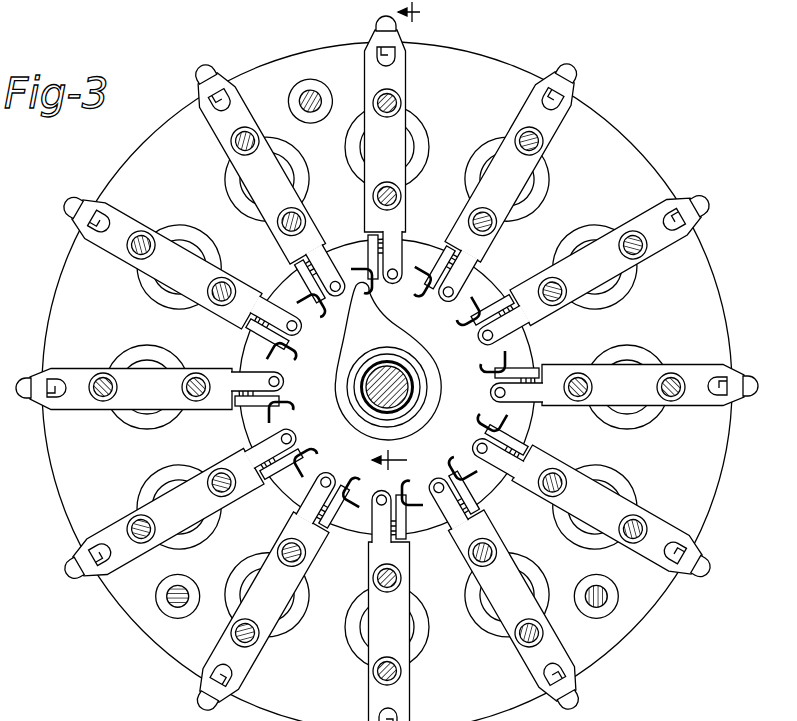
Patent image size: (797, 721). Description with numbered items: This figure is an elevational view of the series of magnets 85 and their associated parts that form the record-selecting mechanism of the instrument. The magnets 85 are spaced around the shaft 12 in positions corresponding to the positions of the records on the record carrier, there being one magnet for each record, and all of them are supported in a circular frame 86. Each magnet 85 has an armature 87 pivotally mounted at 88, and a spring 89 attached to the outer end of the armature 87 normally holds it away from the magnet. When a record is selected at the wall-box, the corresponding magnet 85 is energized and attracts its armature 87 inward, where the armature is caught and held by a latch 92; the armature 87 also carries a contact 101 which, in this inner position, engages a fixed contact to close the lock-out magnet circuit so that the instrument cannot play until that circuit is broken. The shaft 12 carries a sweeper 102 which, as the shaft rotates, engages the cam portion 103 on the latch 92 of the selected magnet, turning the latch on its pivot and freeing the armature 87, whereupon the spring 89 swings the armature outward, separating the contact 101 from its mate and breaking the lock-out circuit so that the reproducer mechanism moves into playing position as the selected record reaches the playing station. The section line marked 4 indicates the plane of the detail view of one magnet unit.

The shaft 12 is at (407, 388).
The magnets 85 is at (538, 220).
The circular frame 86 is at (638, 160).
The armature 87 is at (548, 141).
The armature pivot 88 is at (565, 107).
The spring 89 is at (580, 80).
The latch 92 is at (448, 252).
The contact 101 is at (272, 354).
The sweeper 102 is at (356, 312).
The cam portion 103 is at (292, 400).
The section line 4- 4 is at (405, 245).